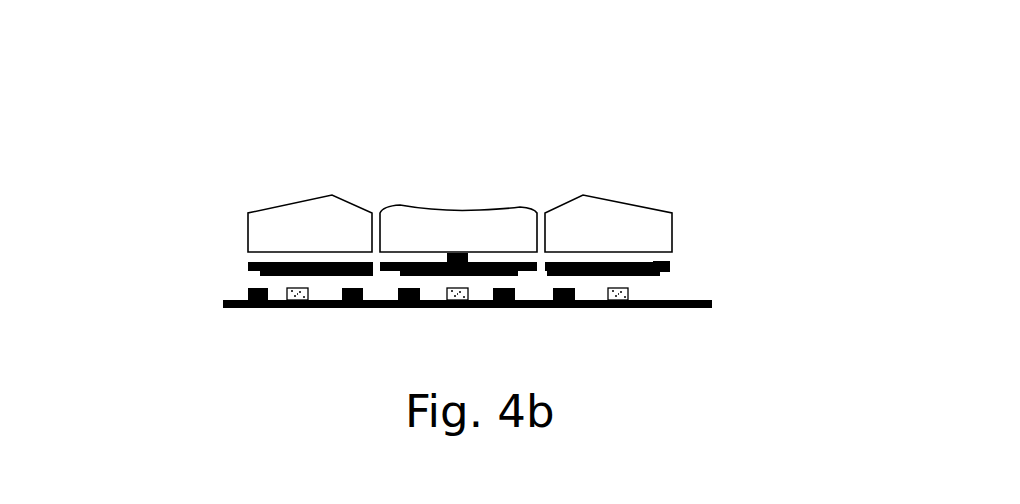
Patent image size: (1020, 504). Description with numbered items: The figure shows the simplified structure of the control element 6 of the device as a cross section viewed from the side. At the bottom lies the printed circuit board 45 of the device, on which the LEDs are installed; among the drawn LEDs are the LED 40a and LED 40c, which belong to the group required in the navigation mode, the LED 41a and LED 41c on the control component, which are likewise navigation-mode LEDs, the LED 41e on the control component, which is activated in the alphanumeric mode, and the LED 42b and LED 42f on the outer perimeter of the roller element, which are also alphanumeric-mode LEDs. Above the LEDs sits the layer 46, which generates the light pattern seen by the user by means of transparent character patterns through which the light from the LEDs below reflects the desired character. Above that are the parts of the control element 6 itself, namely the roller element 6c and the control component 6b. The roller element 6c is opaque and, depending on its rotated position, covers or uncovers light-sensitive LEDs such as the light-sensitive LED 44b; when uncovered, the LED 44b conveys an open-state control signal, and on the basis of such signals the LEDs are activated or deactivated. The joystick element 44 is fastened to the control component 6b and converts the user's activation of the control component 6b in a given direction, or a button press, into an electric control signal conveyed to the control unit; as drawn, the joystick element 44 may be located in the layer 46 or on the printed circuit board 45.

The control element 6 is at (222, 196).
The control component 6b is at (400, 217).
The roller element 6c is at (637, 227).
The joystick element 44 is at (460, 258).
The light-sensitive LED 44b is at (252, 292).
The layer 46 is at (657, 268).
The printed circuit board 45 is at (712, 300).
The LED 42f is at (297, 293).
The LED 40c is at (352, 294).
The LED 41c is at (409, 294).
The LED 41e is at (458, 294).
The LED 41a is at (504, 295).
The LED 40a is at (564, 295).
The LED 42b is at (618, 295).